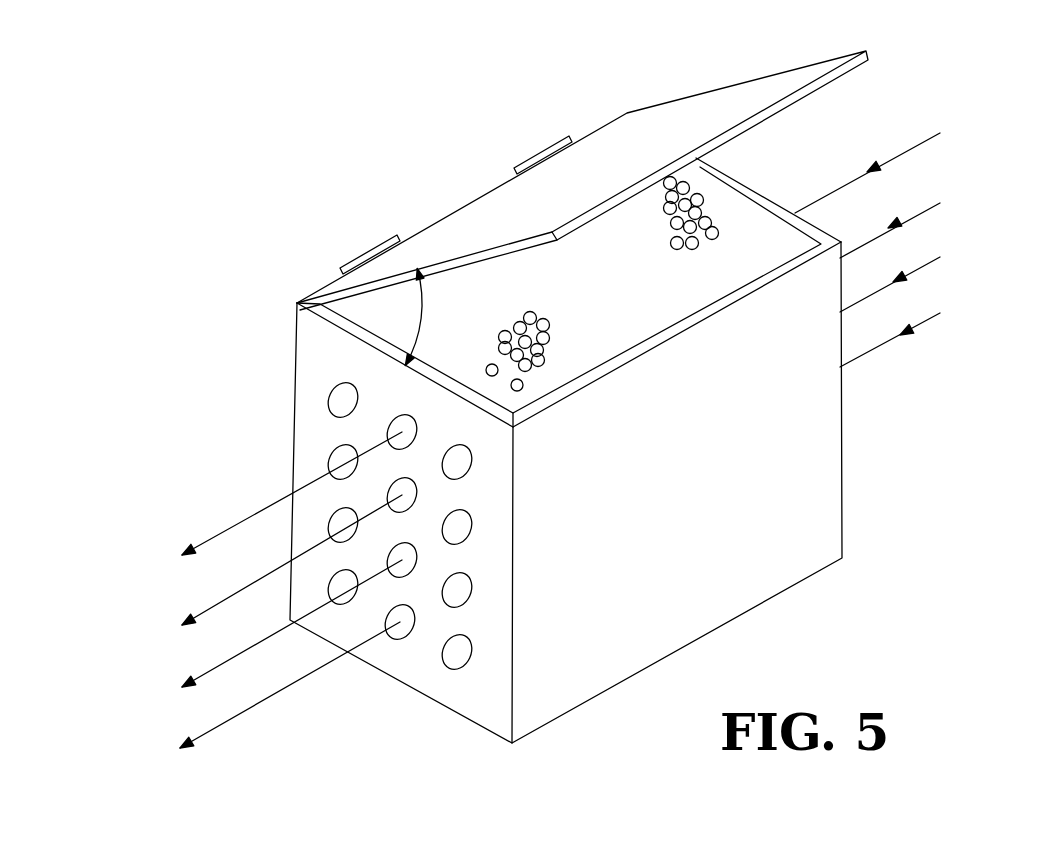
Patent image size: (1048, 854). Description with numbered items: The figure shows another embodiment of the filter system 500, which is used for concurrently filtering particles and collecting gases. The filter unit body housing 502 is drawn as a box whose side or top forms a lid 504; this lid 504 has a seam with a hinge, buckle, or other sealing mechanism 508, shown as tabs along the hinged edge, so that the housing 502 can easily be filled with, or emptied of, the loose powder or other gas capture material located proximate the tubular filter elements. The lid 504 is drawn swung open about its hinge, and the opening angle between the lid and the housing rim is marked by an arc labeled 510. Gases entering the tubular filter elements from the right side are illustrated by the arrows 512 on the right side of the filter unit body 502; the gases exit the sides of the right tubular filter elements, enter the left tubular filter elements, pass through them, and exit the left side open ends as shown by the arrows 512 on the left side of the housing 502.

The filter system 500 is at (424, 88).
The filter unit body housing 502 is at (718, 467).
The lid 504 is at (720, 87).
The sealing mechanism 508 is at (522, 166).
The lid opening angle 510 is at (422, 312).
The arrows 512 is at (163, 543).